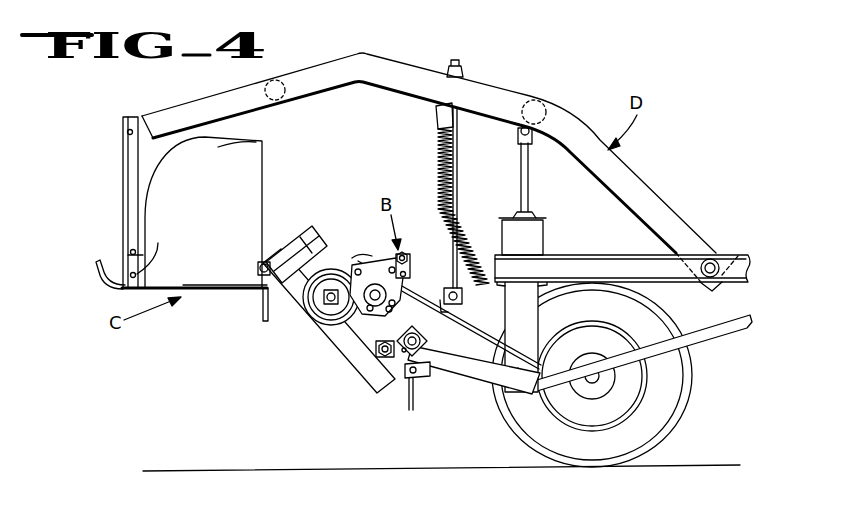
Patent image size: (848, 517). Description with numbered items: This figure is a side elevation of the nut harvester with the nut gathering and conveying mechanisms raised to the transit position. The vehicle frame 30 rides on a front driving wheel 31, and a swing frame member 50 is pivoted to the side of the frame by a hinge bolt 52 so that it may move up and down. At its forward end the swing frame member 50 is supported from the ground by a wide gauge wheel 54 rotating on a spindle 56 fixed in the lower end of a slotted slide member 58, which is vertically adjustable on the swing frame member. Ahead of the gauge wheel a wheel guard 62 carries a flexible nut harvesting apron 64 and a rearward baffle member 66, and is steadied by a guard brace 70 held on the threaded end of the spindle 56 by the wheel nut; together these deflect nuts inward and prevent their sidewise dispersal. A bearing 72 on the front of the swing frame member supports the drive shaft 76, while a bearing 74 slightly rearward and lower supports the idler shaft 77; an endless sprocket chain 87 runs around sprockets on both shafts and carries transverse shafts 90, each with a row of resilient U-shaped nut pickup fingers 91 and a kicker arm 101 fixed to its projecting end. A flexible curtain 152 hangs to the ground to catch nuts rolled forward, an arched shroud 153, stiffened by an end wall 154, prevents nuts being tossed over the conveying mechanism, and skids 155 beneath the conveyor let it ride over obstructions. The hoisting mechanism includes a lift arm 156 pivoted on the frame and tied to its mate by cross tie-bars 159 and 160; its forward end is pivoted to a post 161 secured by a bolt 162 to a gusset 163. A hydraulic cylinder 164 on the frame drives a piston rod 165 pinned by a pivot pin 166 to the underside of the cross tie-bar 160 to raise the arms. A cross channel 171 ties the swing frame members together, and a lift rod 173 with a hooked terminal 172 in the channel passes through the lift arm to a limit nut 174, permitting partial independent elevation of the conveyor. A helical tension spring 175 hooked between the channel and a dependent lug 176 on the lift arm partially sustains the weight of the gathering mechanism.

The vehicle frame 30 is at (751, 257).
The front driving wheel 31 is at (674, 410).
The swing frame member 50 is at (487, 368).
The hinge bolt 52 is at (522, 382).
The gauge wheel 54 is at (325, 313).
The spindle 56 is at (334, 305).
The slide member 58 is at (352, 258).
The wheel guard 62 is at (301, 233).
The nut harvesting apron 64 is at (259, 270).
The baffle member 66 is at (372, 368).
The guard brace 70 is at (262, 263).
The bearing 72 is at (396, 299).
The bearing 74 is at (428, 340).
The drive shaft 76 is at (391, 311).
The idler shaft 77 is at (412, 352).
The endless sprocket chain 87 is at (408, 275).
The shaft 90 is at (404, 255).
The nut pickup finger 91 is at (414, 407).
The kicker arm 101 is at (422, 379).
The flexible curtain 152 is at (263, 310).
The arched shroud 153 is at (264, 143).
The end wall 154 is at (216, 206).
The skid 155 is at (100, 273).
The lift arm 156 is at (258, 90).
The cross tie-bar 159 is at (283, 79).
The cross tie-bar 160 is at (552, 101).
The post 161 is at (130, 155).
The bolt 162 is at (138, 252).
The gusset 163 is at (130, 255).
The hydraulic cylinder 164 is at (530, 222).
The piston rod 165 is at (529, 182).
The pivot pin 166 is at (521, 133).
The cross channel 171 is at (451, 311).
The hooked terminal 172 is at (463, 298).
The lift rod 173 is at (459, 202).
The limit nut 174 is at (463, 72).
The helical tension spring 175 is at (437, 152).
The dependent lug 176 is at (437, 114).